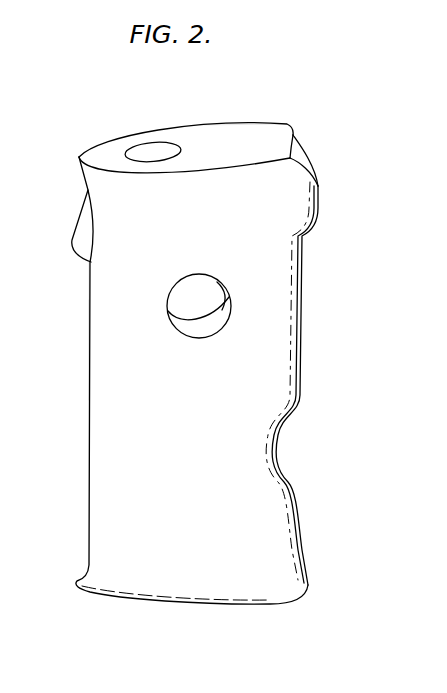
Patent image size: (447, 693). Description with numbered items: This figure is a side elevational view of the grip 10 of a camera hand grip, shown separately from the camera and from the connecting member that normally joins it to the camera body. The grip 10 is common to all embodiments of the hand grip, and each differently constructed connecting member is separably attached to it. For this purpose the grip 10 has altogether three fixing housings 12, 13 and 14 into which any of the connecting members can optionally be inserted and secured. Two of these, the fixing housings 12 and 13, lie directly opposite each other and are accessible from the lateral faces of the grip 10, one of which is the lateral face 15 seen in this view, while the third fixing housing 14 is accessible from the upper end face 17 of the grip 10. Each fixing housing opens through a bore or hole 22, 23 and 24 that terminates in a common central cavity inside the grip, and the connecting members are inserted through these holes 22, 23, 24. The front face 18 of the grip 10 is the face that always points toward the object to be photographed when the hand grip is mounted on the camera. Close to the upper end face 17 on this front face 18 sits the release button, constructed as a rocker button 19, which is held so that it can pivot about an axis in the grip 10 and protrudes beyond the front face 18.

The grip 10 is at (70, 488).
The fixing housing 12 is at (218, 335).
The fixing housing 13 is at (213, 308).
The fixing housing 14 is at (170, 143).
The lateral face 15 is at (118, 413).
The upper end face 17 is at (263, 141).
The front face 18 is at (89, 338).
The rocker button 19 is at (72, 232).
The bore or hole 22 is at (190, 326).
The bore or hole 23 is at (192, 298).
The bore or hole 24 is at (145, 150).